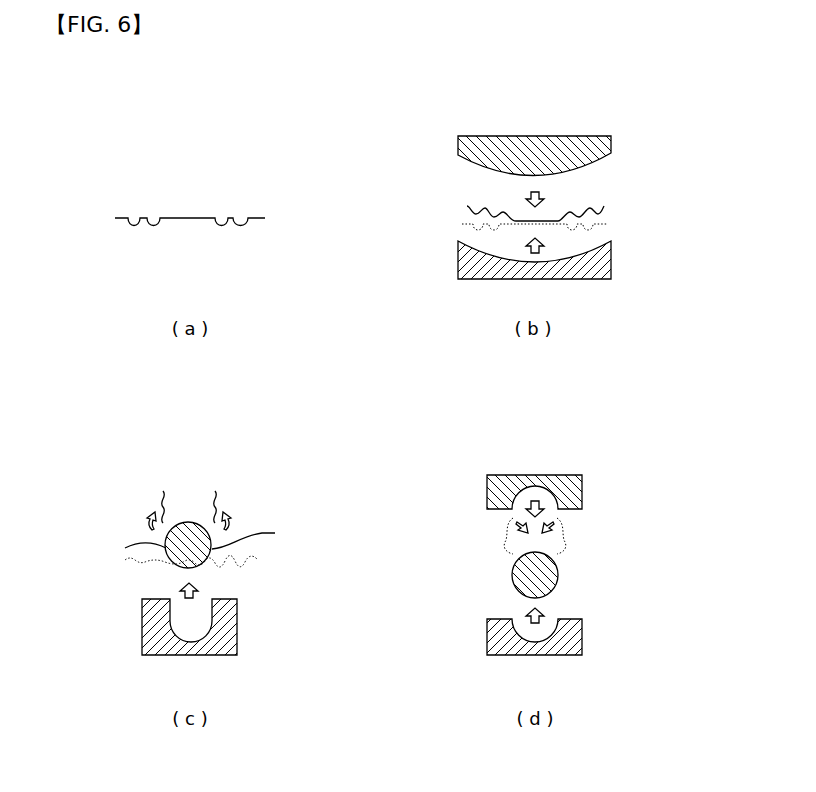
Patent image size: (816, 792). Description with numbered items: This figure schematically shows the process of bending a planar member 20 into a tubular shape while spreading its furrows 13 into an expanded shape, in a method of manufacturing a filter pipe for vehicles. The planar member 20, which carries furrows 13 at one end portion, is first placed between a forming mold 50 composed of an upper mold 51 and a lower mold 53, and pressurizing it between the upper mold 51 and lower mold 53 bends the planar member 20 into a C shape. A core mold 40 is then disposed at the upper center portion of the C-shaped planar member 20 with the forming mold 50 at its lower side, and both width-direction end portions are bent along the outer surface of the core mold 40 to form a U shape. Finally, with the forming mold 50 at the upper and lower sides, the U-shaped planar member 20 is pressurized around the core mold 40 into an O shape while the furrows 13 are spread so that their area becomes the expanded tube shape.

The furrows 13 is at (245, 217).
The planar member 20 is at (193, 216).
The core mold 40 is at (125, 548).
The forming mold 50 is at (673, 200).
The upper mold 51 is at (611, 150).
The lower mold 53 is at (611, 262).